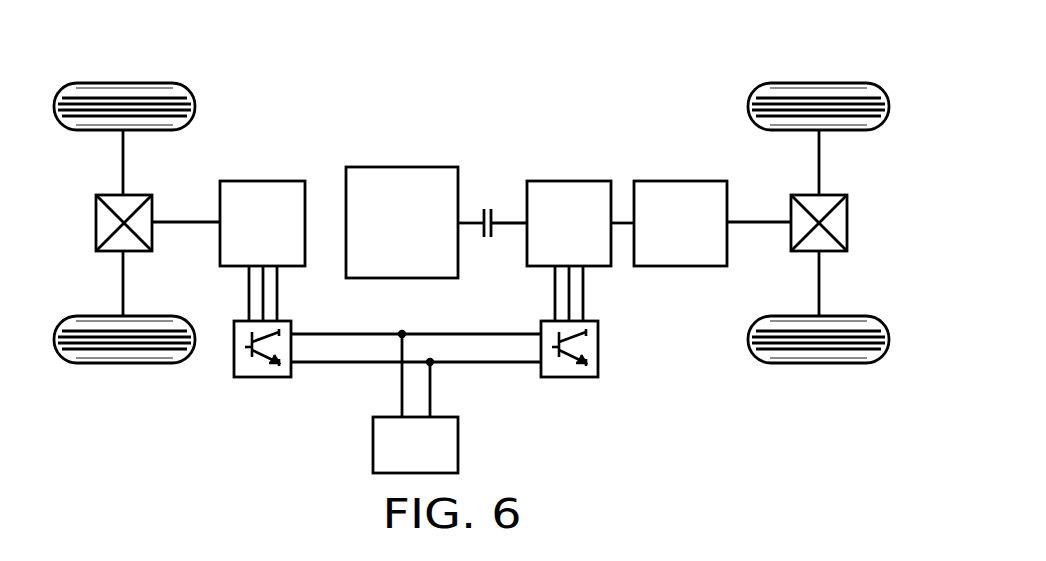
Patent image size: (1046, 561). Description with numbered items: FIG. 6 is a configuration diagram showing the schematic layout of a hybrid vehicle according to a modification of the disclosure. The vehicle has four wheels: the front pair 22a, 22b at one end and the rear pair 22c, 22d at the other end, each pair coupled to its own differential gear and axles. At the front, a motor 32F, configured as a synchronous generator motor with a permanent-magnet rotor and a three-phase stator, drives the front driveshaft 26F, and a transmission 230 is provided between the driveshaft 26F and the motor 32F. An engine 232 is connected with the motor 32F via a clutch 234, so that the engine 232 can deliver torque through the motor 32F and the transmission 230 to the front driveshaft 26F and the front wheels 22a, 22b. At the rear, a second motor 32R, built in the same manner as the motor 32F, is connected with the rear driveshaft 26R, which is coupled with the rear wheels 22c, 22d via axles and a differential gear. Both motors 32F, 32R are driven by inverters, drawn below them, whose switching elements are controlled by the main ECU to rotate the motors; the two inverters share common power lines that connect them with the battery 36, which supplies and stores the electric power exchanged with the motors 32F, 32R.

The front right wheel 22a is at (818, 83).
The rear right wheel 22b is at (818, 363).
The front left wheel 22c is at (123, 83).
The rear left wheel 22d is at (123, 363).
The driveshaft 26R is at (180, 220).
The driveshaft 26F is at (749, 221).
The motor 32R is at (262, 181).
The motor 32F is at (569, 181).
The engine 232 is at (402, 167).
The clutch 234 is at (492, 208).
The transmission 230 is at (679, 181).
The battery 36 is at (458, 444).